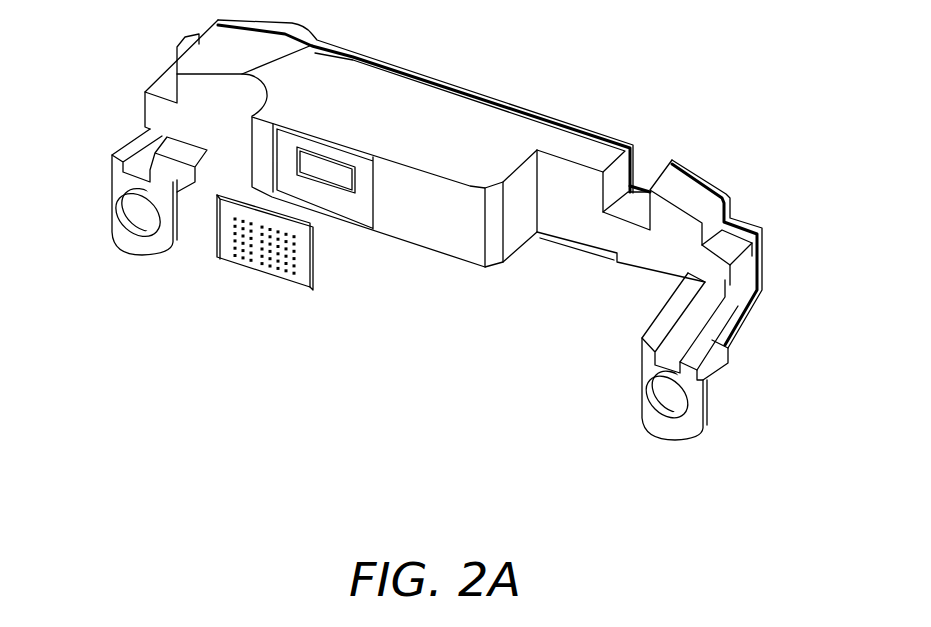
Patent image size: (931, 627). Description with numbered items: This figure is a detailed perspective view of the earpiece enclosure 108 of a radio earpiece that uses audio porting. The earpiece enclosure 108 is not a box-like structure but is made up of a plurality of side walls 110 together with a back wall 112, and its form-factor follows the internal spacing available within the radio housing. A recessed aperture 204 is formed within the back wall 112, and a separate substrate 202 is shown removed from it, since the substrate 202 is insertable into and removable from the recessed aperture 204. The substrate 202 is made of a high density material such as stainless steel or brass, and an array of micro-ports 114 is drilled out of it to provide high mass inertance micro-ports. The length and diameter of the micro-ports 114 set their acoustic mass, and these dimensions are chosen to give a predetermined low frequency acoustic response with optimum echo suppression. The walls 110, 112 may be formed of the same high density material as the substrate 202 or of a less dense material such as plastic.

The earpiece enclosure 108 is at (448, 269).
The side walls 110 is at (147, 98).
The back wall 112 is at (432, 228).
The array of micro-ports 114 is at (285, 267).
The substrate 202 is at (253, 262).
The recessed aperture 204 is at (330, 188).